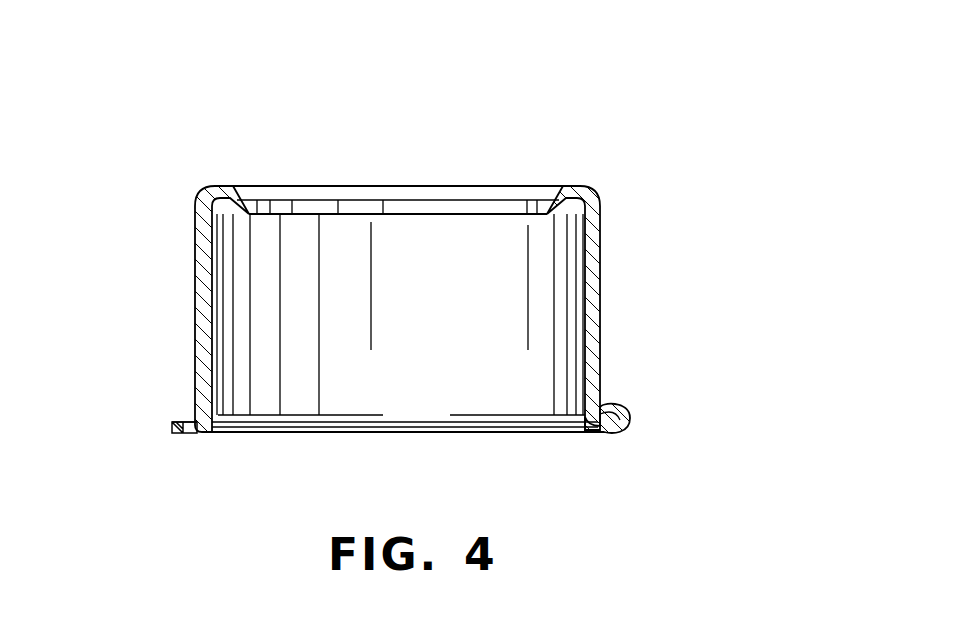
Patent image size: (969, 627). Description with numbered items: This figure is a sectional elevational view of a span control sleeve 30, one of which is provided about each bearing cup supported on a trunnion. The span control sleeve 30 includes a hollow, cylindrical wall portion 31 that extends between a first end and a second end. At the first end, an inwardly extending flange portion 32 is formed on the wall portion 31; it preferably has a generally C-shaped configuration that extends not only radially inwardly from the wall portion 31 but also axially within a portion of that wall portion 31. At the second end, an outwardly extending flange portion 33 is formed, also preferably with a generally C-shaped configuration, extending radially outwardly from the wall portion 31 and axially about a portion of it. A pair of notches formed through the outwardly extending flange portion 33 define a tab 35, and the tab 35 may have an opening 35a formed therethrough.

The span control sleeve 30 is at (571, 126).
The wall portion 31 is at (596, 288).
The inwardly extending flange portion 32 is at (548, 186).
The outwardly extending flange portion 33 is at (617, 420).
The tab 35 is at (171, 428).
The opening 35a is at (196, 421).